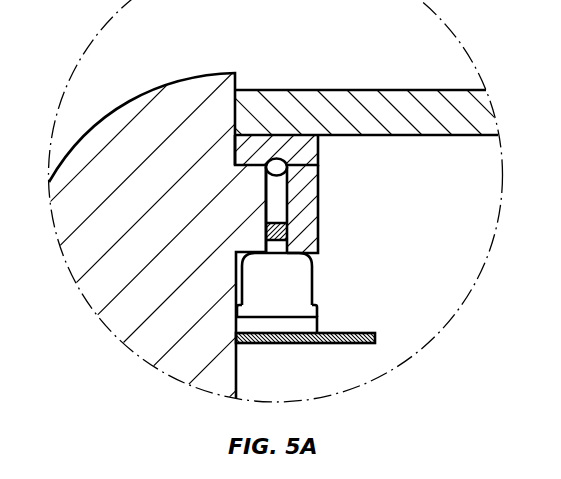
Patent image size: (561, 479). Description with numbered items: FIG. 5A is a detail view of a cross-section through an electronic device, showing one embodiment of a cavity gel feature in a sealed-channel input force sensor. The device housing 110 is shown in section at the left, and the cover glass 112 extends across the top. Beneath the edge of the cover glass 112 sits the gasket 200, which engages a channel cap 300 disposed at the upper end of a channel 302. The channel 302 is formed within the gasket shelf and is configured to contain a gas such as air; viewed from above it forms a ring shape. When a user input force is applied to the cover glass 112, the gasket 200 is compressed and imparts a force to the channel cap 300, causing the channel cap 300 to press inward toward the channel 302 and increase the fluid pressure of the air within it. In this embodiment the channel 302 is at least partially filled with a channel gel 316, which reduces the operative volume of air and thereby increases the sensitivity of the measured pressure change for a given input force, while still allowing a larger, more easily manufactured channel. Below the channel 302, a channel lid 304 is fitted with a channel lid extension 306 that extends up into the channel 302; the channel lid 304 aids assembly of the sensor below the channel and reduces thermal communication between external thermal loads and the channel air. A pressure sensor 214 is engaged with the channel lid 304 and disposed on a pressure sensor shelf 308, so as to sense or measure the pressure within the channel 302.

The housing 110 is at (130, 82).
The cover glass 112 is at (388, 90).
The gasket 200 is at (251, 136).
The channel cap 300 is at (287, 159).
The channel 302 is at (288, 196).
The channel gel 316 is at (289, 228).
The channel lid extension 306 is at (290, 247).
The channel lid 304 is at (313, 277).
The pressure sensor 214 is at (318, 321).
The pressure sensor shelf 308 is at (277, 344).